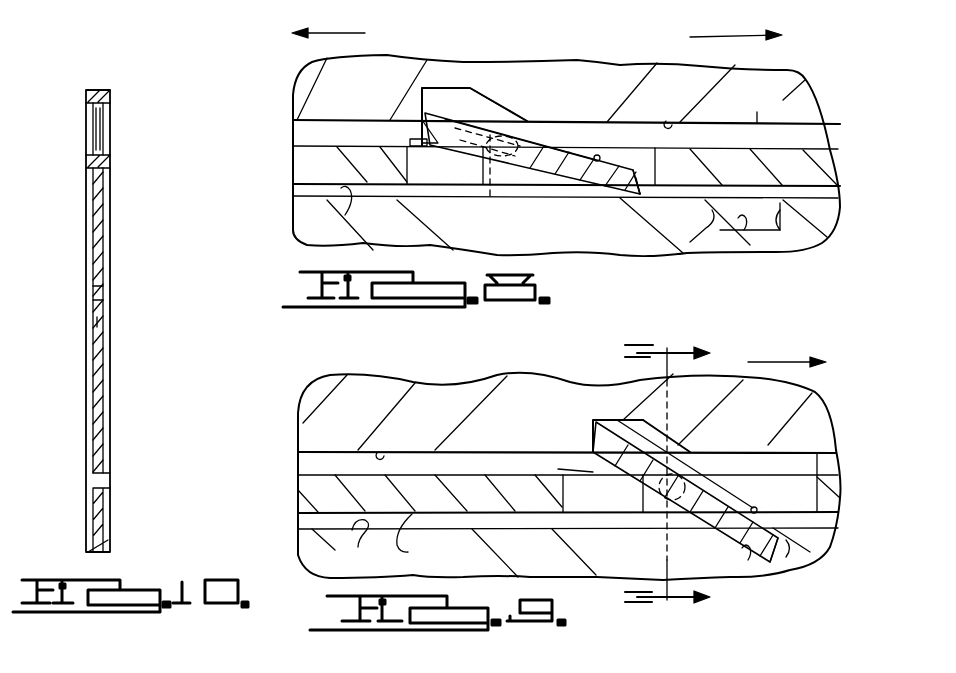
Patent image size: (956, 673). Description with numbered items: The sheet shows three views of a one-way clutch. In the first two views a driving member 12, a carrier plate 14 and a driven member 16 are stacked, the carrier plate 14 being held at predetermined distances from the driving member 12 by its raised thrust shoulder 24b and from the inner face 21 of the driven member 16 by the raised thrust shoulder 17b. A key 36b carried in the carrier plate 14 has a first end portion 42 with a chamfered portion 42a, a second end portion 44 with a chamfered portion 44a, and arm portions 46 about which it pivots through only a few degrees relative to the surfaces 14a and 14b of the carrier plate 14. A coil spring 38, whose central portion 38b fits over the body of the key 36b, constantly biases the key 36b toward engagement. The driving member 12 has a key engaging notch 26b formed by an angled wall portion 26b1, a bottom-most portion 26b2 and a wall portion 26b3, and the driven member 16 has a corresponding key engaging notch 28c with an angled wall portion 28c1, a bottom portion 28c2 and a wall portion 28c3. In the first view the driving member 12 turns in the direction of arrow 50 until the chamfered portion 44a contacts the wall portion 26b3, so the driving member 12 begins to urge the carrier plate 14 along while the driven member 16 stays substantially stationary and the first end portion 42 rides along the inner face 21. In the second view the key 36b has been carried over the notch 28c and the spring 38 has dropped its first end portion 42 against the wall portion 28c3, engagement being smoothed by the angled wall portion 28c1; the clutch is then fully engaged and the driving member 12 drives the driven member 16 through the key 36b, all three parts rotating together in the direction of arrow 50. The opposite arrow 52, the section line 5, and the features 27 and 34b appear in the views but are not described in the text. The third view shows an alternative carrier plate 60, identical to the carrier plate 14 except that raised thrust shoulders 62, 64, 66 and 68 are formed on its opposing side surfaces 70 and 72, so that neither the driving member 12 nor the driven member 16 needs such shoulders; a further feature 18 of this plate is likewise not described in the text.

In FIG. 8, the driving member 12 is at (307, 83).
In FIG. 9, the driving member 12 is at (320, 393).
In FIG. 8, the carrier plate 14 is at (297, 165).
In FIG. 9, the carrier plate 14 is at (307, 492).
In FIG. 8, the surface of the carrier plate 14a is at (303, 208).
In FIG. 9, the surface of the carrier plate 14a is at (418, 541).
In FIG. 8, the surface of the carrier plate 14b is at (762, 113).
In FIG. 9, the surface of the carrier plate 14b is at (820, 440).
In FIG. 9, the driven member 16 is at (307, 547).
In FIG. 8, the raised thrust shoulder 17b is at (297, 191).
In FIG. 9, the raised thrust shoulder 17b is at (300, 520).
In FIG. 10, the blade body 18 is at (97, 353).
In FIG. 8, the inner face of the driven member 21 is at (338, 214).
In FIG. 9, the inner face of the driven member 21 is at (354, 544).
In FIG. 8, the raised thrust shoulder 24b is at (292, 133).
In FIG. 9, the raised thrust shoulder 24b is at (307, 465).
In FIG. 8, the key engaging notch 26b is at (453, 92).
In FIG. 8, the angled wall portion 26b1 is at (494, 92).
In FIG. 9, the angled wall portion 26b1 is at (662, 431).
In FIG. 9, the bottom-most portion 26b2 is at (631, 420).
In FIG. 8, the wall portion 26b3 is at (430, 87).
In FIG. 9, the wall portion 26b3 is at (594, 421).
In FIG. 8, the aperture 27 is at (668, 119).
In FIG. 9, the aperture 27 is at (378, 450).
In FIG. 8, the key engaging notch 28c is at (755, 217).
In FIG. 8, the angled wall portion 28c1 is at (707, 218).
In FIG. 8, the groove second portion 28c2 is at (740, 232).
In FIG. 9, the groove second portion 28c2 is at (745, 562).
In FIG. 8, the wall portion 28c3 is at (791, 244).
In FIG. 9, the wall portion 28c3 is at (793, 547).
In FIG. 8, the holder block 34b is at (437, 173).
In FIG. 9, the holder block 34b is at (572, 497).
In FIG. 8, the key 36b is at (568, 170).
In FIG. 9, the key 36b is at (680, 530).
In FIG. 8, the coil spring 38 is at (533, 120).
In FIG. 9, the coil spring 38 is at (640, 498).
In FIG. 8, the central portion of the coil spring 38b is at (572, 147).
In FIG. 9, the central portion of the coil spring 38b is at (723, 490).
In FIG. 8, the first end portion 42 is at (621, 198).
In FIG. 8, the chamfered portion 42a is at (655, 176).
In FIG. 9, the chamfered portion 42a is at (786, 543).
In FIG. 8, the second end portion 44 is at (430, 122).
In FIG. 8, the chamfered portion 44a is at (440, 136).
In FIG. 9, the chamfered portion 44a is at (592, 432).
In FIG. 8, the arm portions 46 is at (483, 181).
In FIG. 8, the directional arrow 50 is at (693, 38).
In FIG. 9, the directional arrow 50 is at (780, 360).
In FIG. 8, the direction of withdrawal 52 is at (352, 33).
In FIG. 9, the section line 5 is at (667, 478).
In FIG. 10, the carrier plate 60 is at (139, 224).
In FIG. 10, the raised thrust shoulder 62 is at (84, 93).
In FIG. 10, the raised thrust shoulder 64 is at (86, 163).
In FIG. 10, the raised thrust shoulder 66 is at (108, 92).
In FIG. 10, the raised thrust shoulder 68 is at (110, 160).
In FIG. 10, the side surface 70 is at (93, 210).
In FIG. 10, the side surface 72 is at (103, 247).